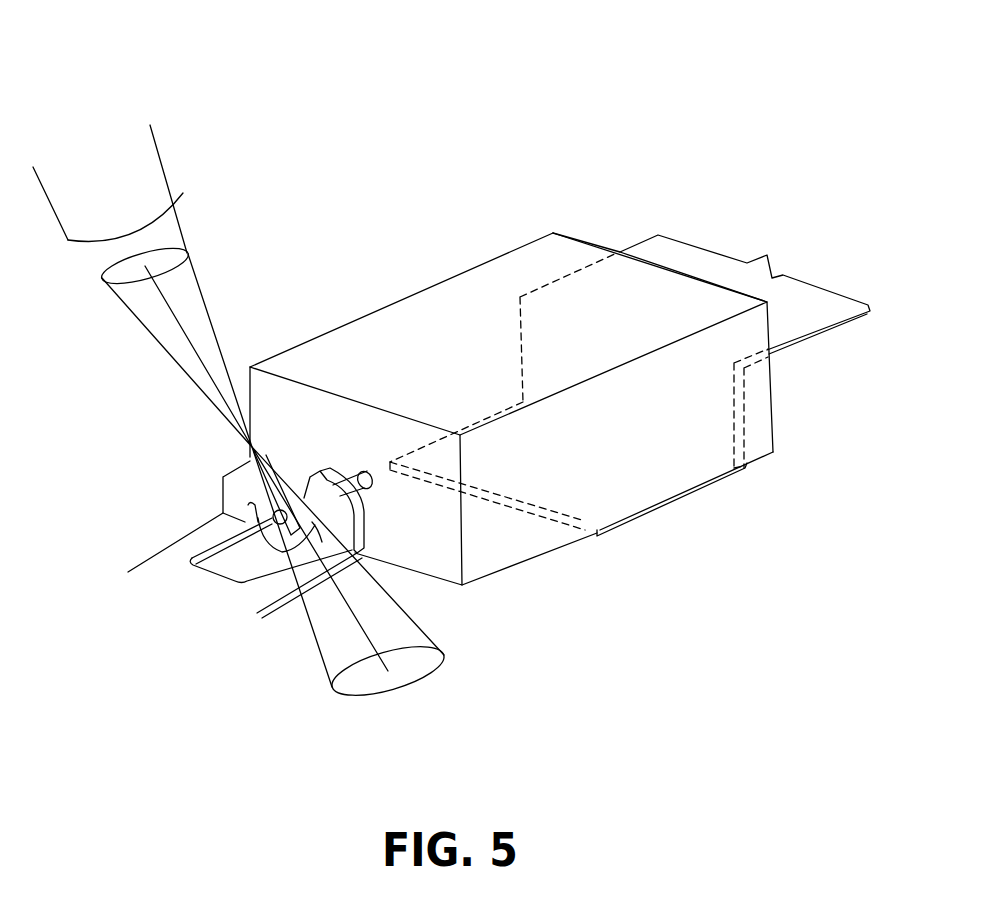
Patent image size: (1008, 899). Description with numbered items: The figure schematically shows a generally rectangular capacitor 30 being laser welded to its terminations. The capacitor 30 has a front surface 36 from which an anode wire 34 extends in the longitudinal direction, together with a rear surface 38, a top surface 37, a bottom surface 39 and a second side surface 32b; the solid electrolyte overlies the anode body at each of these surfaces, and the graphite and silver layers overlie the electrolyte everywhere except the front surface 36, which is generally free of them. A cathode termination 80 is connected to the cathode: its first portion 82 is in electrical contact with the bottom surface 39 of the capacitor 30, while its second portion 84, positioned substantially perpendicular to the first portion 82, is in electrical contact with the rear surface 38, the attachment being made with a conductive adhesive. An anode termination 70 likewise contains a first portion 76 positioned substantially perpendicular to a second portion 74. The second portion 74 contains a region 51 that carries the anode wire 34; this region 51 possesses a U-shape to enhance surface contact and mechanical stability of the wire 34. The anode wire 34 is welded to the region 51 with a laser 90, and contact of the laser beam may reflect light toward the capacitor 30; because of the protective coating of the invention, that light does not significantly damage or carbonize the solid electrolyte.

The capacitor 30 is at (581, 356).
The second side surface 32b is at (713, 448).
The anode wire 34 is at (350, 482).
The front surface 36 is at (427, 547).
The top surface 37 is at (370, 343).
The rear surface 38 is at (587, 240).
The bottom surface 39 is at (535, 557).
The region 51 is at (275, 522).
The anode termination 70 is at (190, 600).
The second portion 74 is at (235, 487).
The first portion 76 is at (280, 612).
The cathode termination 80 is at (720, 252).
The first portion 82 is at (687, 498).
The second portion 84 is at (743, 402).
The laser 90 is at (112, 143).